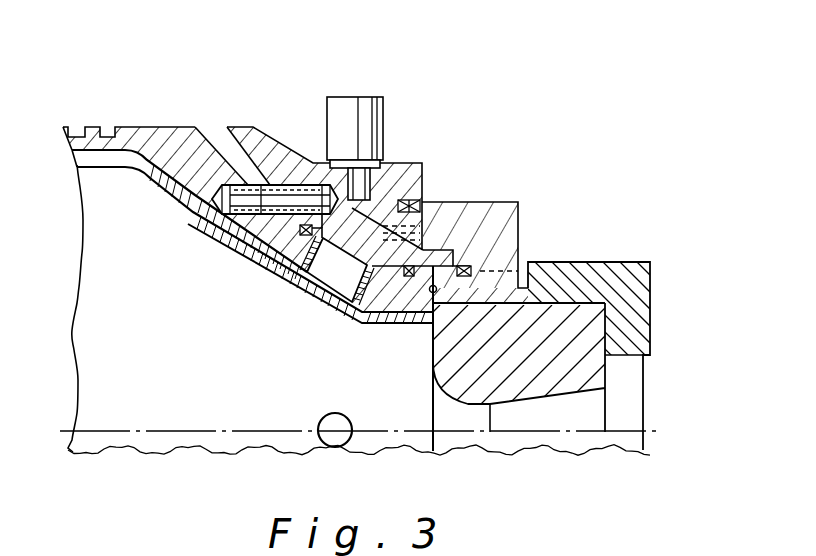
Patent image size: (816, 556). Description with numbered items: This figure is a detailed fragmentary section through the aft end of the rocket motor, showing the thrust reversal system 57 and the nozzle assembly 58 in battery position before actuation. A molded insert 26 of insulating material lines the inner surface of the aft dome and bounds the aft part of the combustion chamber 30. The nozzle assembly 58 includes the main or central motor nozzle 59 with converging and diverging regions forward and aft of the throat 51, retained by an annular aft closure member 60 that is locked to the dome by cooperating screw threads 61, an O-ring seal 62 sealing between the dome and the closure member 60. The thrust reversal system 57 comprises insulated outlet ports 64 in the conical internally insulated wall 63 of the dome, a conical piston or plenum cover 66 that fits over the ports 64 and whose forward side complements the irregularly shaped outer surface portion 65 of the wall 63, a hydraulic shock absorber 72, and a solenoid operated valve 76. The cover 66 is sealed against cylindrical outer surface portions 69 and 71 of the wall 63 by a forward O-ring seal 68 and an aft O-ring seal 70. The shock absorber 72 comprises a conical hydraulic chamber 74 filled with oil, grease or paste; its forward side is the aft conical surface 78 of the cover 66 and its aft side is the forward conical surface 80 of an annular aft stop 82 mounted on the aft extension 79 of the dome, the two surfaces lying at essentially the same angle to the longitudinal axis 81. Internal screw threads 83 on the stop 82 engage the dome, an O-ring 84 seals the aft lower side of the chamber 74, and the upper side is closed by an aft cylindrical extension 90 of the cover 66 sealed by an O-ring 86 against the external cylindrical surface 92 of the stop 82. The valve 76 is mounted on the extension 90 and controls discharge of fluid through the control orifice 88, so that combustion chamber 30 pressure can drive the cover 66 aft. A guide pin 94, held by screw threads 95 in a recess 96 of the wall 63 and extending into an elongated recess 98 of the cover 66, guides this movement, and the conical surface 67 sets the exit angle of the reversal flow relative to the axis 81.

The molded insert 26 is at (150, 172).
The combustion chamber 30 is at (139, 382).
The nozzle throat 51 is at (470, 403).
The thrust reversal system 57 is at (411, 244).
The nozzle assembly 58 is at (533, 334).
The main or central motor nozzle 59 is at (545, 378).
The annular aft closure member 60 is at (632, 305).
The cooperating screw threads 61 is at (540, 263).
The O-ring seal 62 is at (427, 327).
The conical internally insulated wall 63 is at (278, 232).
The insulated outlet holes or ports 64 is at (338, 268).
The irregularly shaped outer surface portion 65 is at (306, 262).
The piston or plenum cover 66 is at (269, 184).
The conical surface 67 is at (182, 103).
The forward O-ring seal 68 is at (306, 222).
The cylindrical outer surface portion 69 is at (292, 193).
The aft O-ring seal 70 is at (385, 323).
The cylindrical outer surface portion 71 is at (368, 318).
The hydraulic shock absorber 72 is at (432, 183).
The hydraulic chamber 74 is at (473, 242).
The solenoid operated valve 76 is at (370, 107).
The aft generally conical surface 78 is at (376, 215).
The aft extension 79 is at (433, 293).
The forward generally conical surface 80 is at (437, 215).
The longitudinal axis 81 is at (180, 432).
The aft stop 82 is at (510, 225).
The internal screw threads 83 is at (512, 253).
The O-ring 84 is at (478, 262).
The O-ring 86 is at (405, 165).
The hydraulic fluid control orifice 88 is at (322, 157).
The aft cylindrical extension 90 is at (390, 165).
The external cylindrical surface 92 is at (505, 205).
The guide pin 94 is at (270, 188).
The cooperating screw threads 95 is at (222, 228).
The recess 96 is at (200, 206).
The elongated recess 98 is at (258, 173).